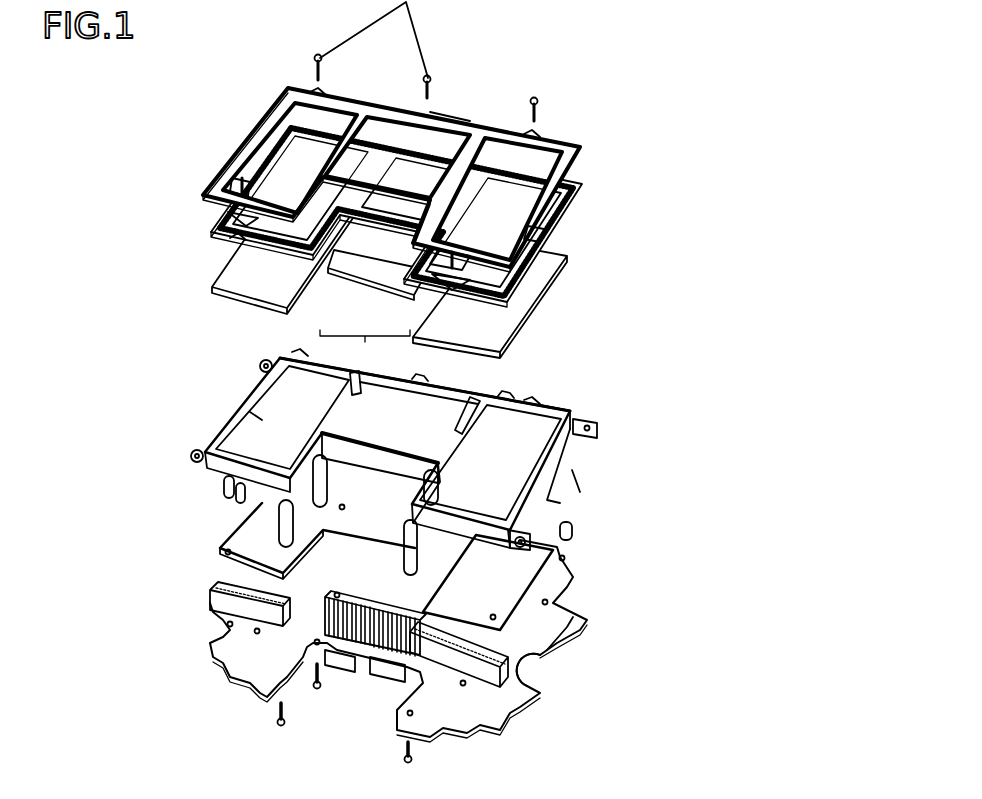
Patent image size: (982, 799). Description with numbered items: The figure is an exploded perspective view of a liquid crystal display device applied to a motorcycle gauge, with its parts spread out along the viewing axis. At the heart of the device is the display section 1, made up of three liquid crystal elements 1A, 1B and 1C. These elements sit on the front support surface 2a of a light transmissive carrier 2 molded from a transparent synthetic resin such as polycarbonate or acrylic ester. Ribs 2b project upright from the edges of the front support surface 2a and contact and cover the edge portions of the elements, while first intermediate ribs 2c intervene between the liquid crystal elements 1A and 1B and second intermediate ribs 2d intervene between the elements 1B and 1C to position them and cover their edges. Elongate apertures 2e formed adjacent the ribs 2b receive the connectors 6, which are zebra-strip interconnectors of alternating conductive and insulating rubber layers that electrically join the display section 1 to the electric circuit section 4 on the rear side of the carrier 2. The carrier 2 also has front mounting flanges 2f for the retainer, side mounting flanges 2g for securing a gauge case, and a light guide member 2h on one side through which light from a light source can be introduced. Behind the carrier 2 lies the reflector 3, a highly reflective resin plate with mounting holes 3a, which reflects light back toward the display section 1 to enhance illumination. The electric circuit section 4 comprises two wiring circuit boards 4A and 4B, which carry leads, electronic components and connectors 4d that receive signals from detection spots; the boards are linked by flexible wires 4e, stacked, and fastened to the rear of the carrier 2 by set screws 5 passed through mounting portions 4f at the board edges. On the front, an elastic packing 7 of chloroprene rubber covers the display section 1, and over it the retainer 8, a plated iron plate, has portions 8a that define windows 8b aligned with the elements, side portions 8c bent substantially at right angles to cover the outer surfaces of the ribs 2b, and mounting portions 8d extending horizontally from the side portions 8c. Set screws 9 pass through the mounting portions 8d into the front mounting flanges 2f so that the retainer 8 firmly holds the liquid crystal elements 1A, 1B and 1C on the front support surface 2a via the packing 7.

The display section 1 is at (365, 347).
The liquid crystal element 1A is at (447, 288).
The liquid crystal element 1B is at (378, 258).
The liquid crystal element 1C is at (297, 275).
The light transmissive carrier 2 is at (222, 476).
The front support surface 2a is at (537, 458).
The ribs 2b is at (563, 418).
The first intermediate ribs 2c is at (465, 434).
The second intermediate ribs 2d is at (352, 383).
The elongate apertures 2e is at (430, 380).
The front mounting flanges 2f is at (298, 356).
The side mounting flanges 2g is at (260, 368).
The light guide member 2h is at (250, 412).
The reflector 3 is at (226, 552).
The mounting holes 3a is at (220, 557).
The electric circuit section 4 is at (630, 590).
The wiring circuit board 4A is at (540, 600).
The wiring circuit board 4B is at (560, 632).
The connectors 4d is at (388, 680).
The flexible wires 4e is at (532, 668).
The mounting portions 4f is at (280, 692).
The set screws 5 is at (278, 712).
The connectors 6 is at (212, 630).
The packing 7 is at (575, 205).
The retainer 8 is at (247, 140).
The portions 8a is at (466, 125).
The windows 8b is at (277, 108).
The side portions 8c is at (235, 212).
The mounting portions 8d is at (318, 90).
The set screws 9 is at (538, 102).